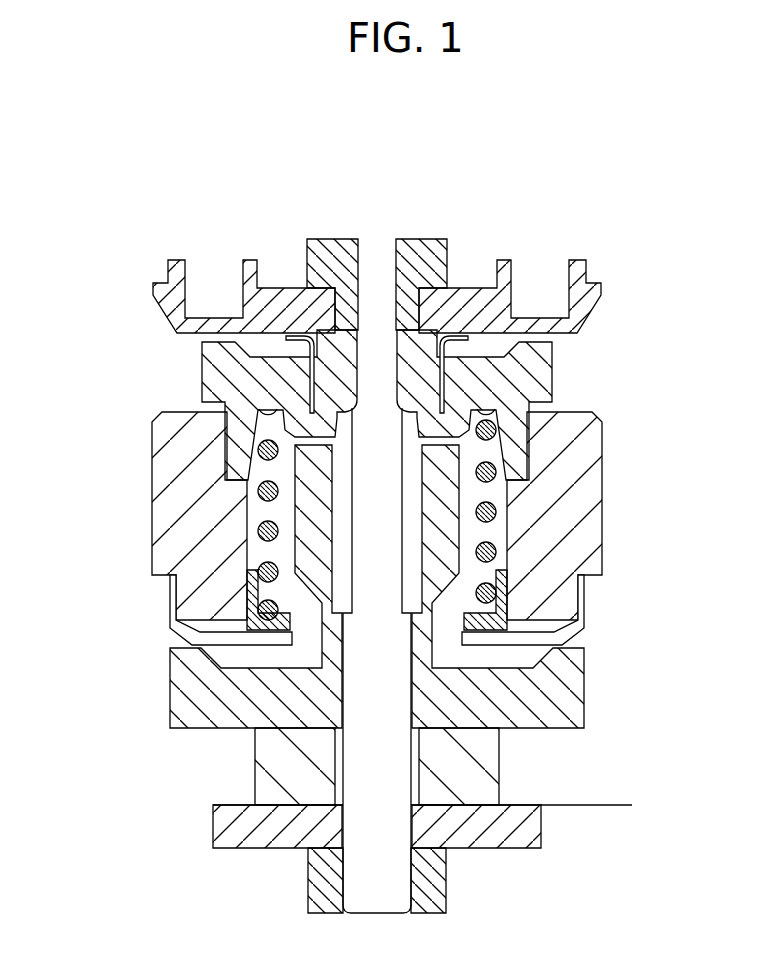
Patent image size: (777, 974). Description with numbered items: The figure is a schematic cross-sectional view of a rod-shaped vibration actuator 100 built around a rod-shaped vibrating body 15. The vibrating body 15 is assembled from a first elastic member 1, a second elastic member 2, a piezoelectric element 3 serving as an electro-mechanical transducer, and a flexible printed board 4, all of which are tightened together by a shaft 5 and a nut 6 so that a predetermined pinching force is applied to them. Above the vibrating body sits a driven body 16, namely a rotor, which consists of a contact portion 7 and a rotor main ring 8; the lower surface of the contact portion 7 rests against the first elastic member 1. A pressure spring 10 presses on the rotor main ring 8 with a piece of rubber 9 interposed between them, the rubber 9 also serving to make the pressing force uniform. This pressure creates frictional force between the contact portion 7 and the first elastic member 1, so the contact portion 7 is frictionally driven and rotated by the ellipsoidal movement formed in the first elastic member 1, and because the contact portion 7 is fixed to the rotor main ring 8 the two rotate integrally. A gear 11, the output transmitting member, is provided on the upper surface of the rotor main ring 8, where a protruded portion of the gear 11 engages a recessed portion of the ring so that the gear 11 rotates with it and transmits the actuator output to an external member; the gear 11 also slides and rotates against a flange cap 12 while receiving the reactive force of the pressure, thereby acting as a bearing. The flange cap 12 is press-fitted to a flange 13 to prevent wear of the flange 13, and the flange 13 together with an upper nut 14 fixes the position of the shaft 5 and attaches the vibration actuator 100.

The vibration actuator 100 is at (226, 237).
The first elastic member 1 is at (570, 698).
The second elastic member 2 is at (535, 827).
The piezoelectric element 3 is at (487, 758).
The flexible printed board 4 is at (600, 805).
The shaft 5 is at (390, 875).
The nut 6 is at (478, 885).
The contact portion 7 is at (338, 610).
The rotor main ring 8 is at (170, 486).
The rubber 9 is at (503, 580).
The pressure spring 10 is at (493, 553).
The gear 11 is at (195, 372).
The flange cap 12 is at (445, 373).
The flange 13 is at (578, 298).
The upper nut 14 is at (447, 270).
The vibrating body 15 is at (445, 668).
The driven body 16 is at (313, 535).